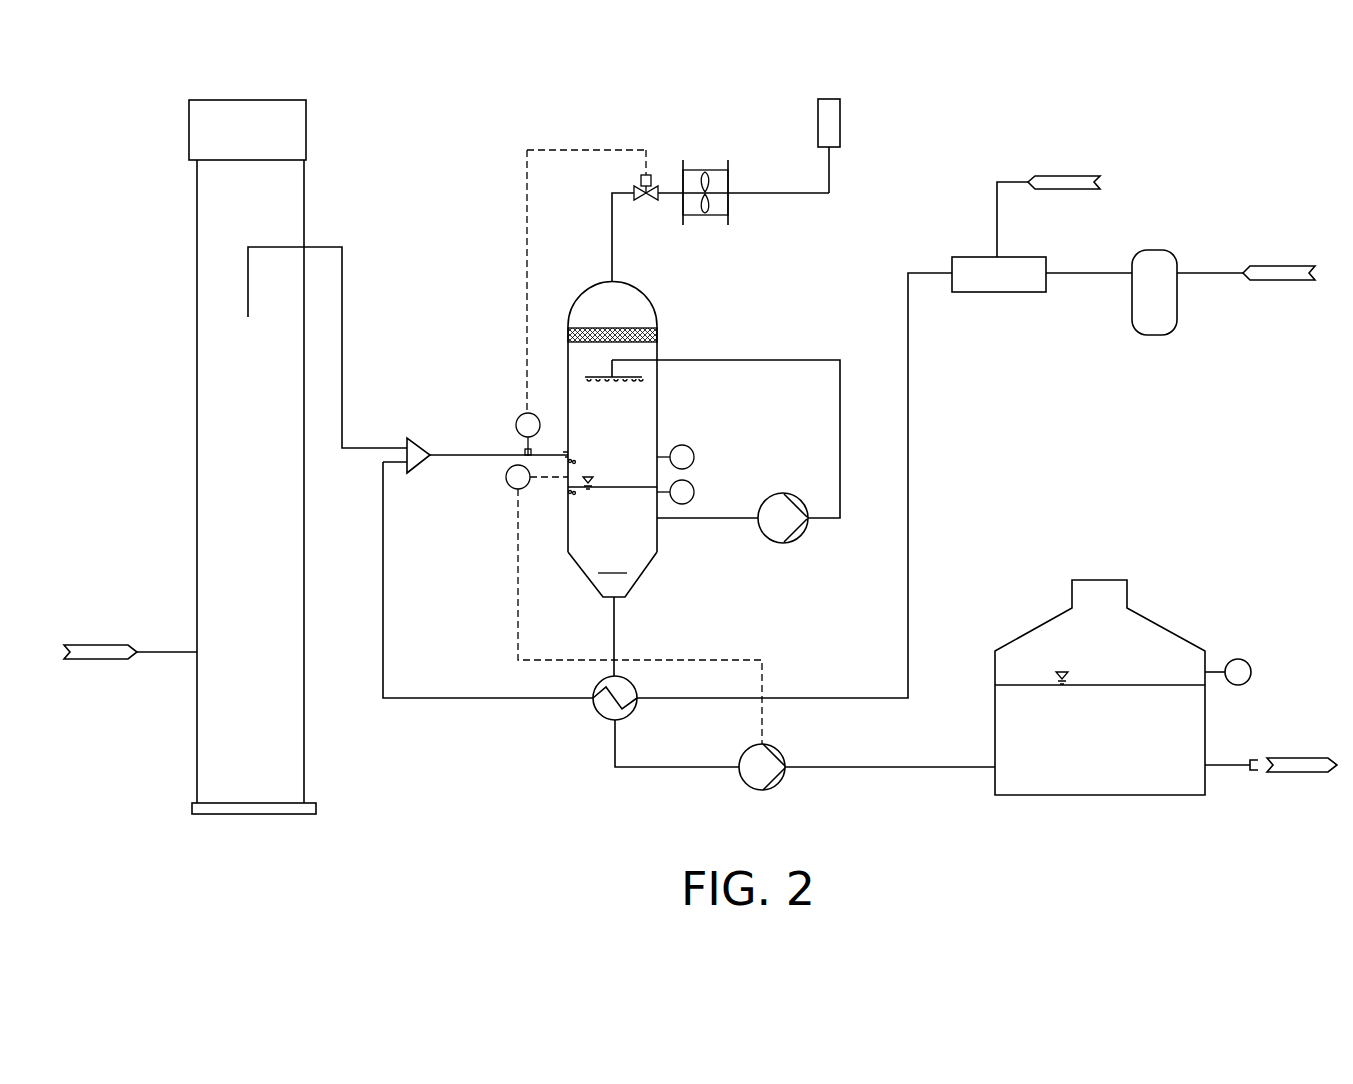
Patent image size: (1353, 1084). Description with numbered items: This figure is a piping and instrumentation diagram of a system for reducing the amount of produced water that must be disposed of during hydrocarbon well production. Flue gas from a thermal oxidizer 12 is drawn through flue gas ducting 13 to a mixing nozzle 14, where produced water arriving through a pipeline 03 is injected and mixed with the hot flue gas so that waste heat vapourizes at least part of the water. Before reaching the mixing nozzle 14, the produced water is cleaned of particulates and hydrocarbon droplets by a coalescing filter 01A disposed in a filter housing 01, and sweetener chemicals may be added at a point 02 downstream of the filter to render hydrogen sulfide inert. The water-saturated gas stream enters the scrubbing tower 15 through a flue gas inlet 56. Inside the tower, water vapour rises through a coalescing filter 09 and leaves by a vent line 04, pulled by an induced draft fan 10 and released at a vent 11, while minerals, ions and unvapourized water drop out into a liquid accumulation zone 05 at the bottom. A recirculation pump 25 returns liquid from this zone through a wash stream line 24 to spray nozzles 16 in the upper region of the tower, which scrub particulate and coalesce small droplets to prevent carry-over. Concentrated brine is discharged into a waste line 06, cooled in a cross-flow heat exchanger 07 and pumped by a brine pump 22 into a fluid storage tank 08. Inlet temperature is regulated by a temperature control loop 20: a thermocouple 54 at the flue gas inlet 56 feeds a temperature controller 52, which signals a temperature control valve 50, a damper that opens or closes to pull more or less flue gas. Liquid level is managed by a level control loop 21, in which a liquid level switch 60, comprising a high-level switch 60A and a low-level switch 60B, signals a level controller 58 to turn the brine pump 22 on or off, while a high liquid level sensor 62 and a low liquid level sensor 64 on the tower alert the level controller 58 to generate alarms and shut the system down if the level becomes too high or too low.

The filter housing 01 is at (1223, 270).
The coalescing filter 01A is at (1155, 268).
The sweetener addition point 02 is at (985, 295).
The pipeline 03 is at (468, 700).
The vent line 04 is at (612, 245).
The liquid accumulation zone 05 is at (613, 560).
The waste line 06 is at (617, 627).
The cross-flow heat exchanger 07 is at (598, 713).
The fluid storage tank 08 is at (1140, 613).
The coalescing filter 09 is at (568, 335).
The induced draft fan 10 is at (705, 215).
The vent 11 is at (818, 121).
The oxidizer 12 is at (304, 183).
The flue gas ducting 13 is at (342, 353).
The mixing nozzle 14 is at (418, 440).
The scrubbing tower 15 is at (652, 307).
The spray nozzles 16 is at (590, 374).
The temperature control loop 20 is at (527, 150).
The level control loop 21 is at (518, 633).
The brine pump 22 is at (770, 789).
The wash stream line 24 is at (708, 520).
The recirculation pump 25 is at (787, 544).
The temperature control valve 50 is at (650, 175).
The temperature controller 52 is at (520, 415).
The thermocouple 54 is at (525, 451).
The flue gas inlet 56 is at (566, 452).
The level controller 58 is at (512, 490).
The liquid level switch 60 is at (590, 478).
The high-level switch 60A is at (575, 460).
The low-level switch 60B is at (575, 493).
The high liquid level sensor 62 is at (690, 447).
The low liquid level sensor 64 is at (692, 485).